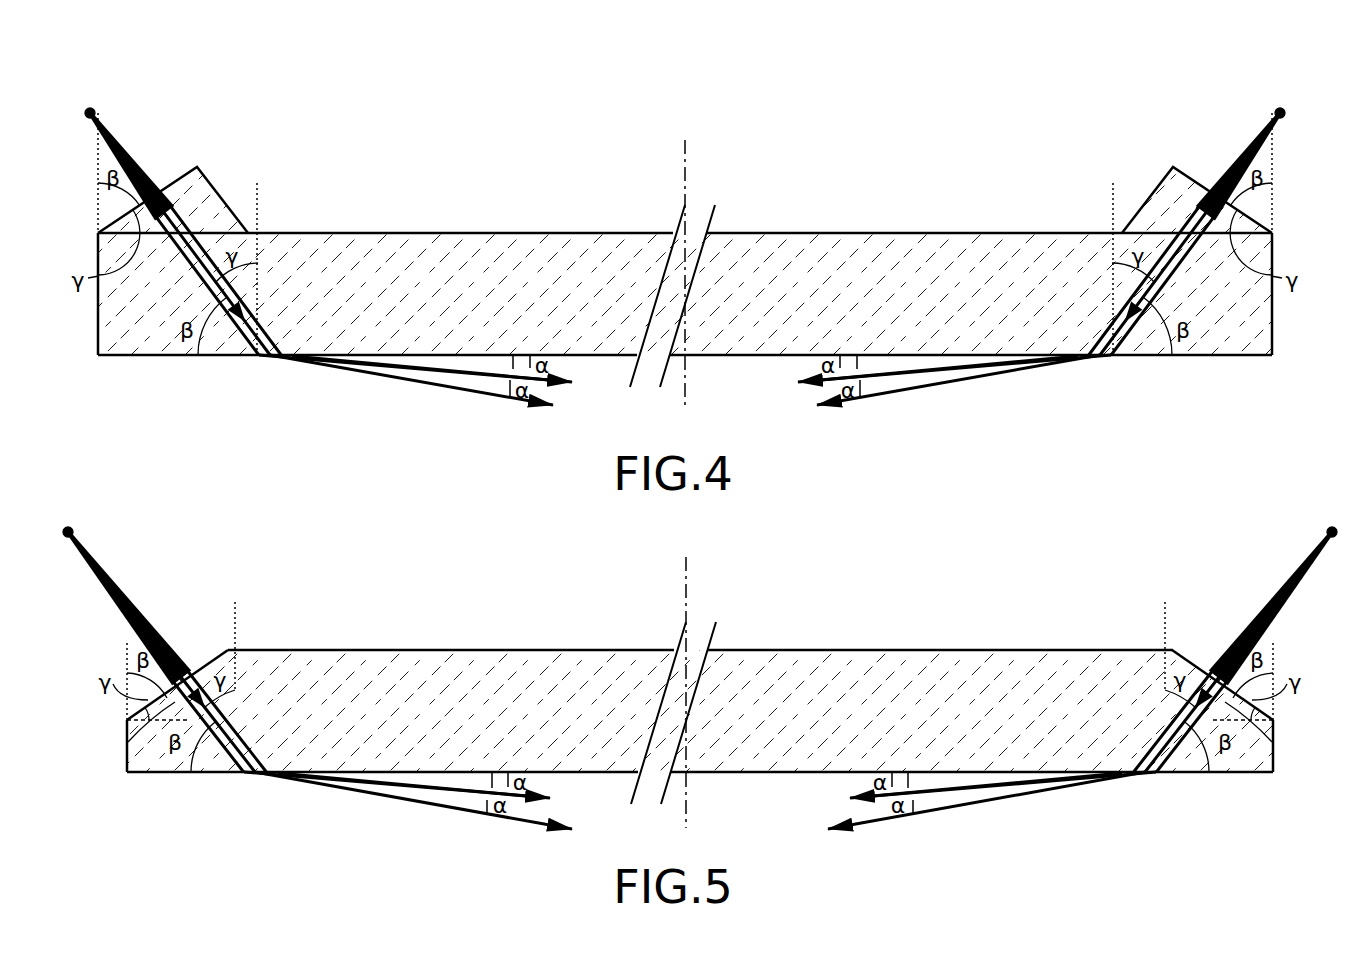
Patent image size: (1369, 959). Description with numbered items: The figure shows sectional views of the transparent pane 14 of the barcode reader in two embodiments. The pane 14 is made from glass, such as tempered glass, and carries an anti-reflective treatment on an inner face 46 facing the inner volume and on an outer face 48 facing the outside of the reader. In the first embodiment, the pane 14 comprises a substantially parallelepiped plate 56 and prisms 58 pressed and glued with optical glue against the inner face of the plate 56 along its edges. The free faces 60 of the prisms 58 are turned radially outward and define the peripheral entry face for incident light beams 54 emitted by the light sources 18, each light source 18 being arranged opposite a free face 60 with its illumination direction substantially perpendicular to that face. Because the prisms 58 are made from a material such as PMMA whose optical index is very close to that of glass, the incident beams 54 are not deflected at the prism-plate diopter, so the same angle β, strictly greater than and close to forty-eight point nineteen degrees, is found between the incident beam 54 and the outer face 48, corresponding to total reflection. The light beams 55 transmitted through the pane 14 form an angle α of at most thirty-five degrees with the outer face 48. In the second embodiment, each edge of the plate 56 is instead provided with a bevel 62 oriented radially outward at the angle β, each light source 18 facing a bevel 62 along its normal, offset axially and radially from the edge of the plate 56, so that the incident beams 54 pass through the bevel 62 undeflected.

In FIG. 4, the transparent pane 14 is at (685, 266).
In FIG. 5, the transparent pane 14 is at (700, 689).
In FIG. 4, the light source 18 is at (88, 100).
In FIG. 5, the light source 18 is at (68, 520).
In FIG. 4, the inner face 46 is at (338, 232).
In FIG. 5, the inner face 46 is at (820, 650).
In FIG. 4, the outer face 48 is at (228, 357).
In FIG. 5, the outer face 48 is at (798, 774).
In FIG. 4, the incident light beam 54 is at (212, 290).
In FIG. 5, the incident light beam 54 is at (128, 742).
In FIG. 4, the transmitted light beam 55 is at (430, 388).
In FIG. 5, the transmitted light beam 55 is at (410, 805).
In FIG. 4, the plate 56 is at (483, 268).
In FIG. 5, the plate 56 is at (475, 662).
In FIG. 4, the prism 58 is at (240, 182).
In FIG. 4, the free face 60 is at (181, 172).
In FIG. 5, the bevel 62 is at (208, 648).